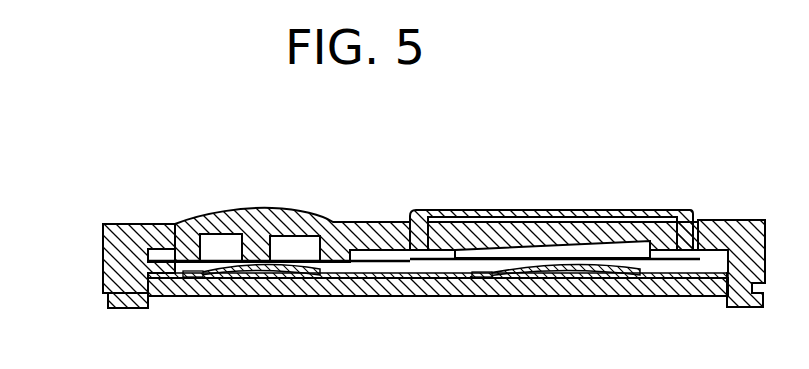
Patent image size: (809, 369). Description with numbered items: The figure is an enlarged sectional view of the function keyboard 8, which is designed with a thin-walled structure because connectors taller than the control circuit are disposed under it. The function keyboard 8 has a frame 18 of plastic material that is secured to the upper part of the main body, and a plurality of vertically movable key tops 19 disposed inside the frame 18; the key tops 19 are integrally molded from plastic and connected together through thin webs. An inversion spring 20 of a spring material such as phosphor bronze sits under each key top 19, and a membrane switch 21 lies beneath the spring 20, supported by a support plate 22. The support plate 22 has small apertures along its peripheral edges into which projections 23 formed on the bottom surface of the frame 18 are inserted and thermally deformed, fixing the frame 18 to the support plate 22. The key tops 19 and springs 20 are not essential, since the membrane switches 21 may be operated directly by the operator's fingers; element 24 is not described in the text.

The function keyboard 8 is at (190, 208).
The frame 18 is at (103, 252).
The key tops 19 is at (312, 218).
The inversion spring 20 is at (240, 275).
The membrane switch 21 is at (386, 297).
The support plate 22 is at (298, 297).
The projections 23 is at (133, 308).
The right end frame member 24 is at (731, 263).